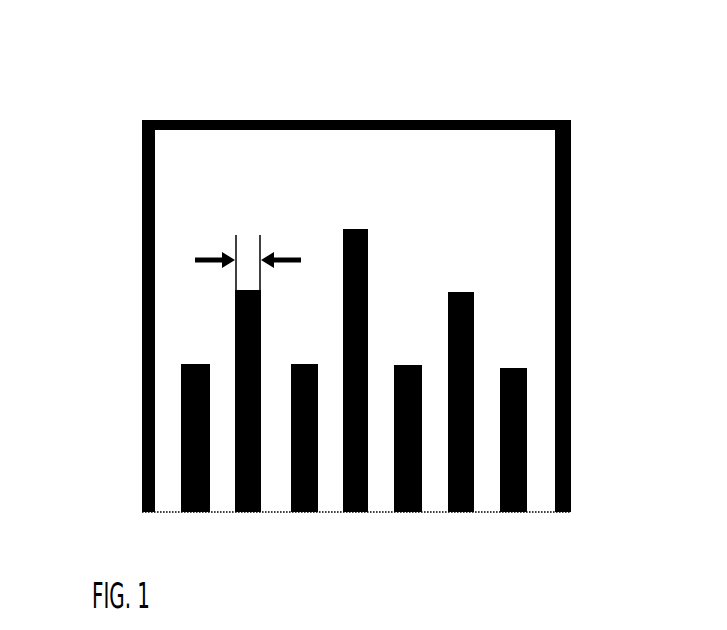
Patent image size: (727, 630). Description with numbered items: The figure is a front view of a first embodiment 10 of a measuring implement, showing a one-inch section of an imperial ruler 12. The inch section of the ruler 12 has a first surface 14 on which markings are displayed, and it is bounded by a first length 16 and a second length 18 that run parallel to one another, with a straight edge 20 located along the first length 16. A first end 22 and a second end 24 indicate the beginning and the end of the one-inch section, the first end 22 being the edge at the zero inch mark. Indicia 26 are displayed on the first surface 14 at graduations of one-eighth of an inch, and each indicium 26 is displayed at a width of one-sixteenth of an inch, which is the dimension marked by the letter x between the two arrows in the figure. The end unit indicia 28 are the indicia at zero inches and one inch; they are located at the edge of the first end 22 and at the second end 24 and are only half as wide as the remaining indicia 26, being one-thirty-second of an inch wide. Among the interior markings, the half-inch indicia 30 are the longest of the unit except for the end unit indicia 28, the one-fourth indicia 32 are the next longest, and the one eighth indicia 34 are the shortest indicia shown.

The first embodiment 10 is at (660, 186).
The imperial ruler 12 is at (223, 155).
The first surface 14 is at (492, 202).
The first length 16 is at (384, 512).
The second length 18 is at (418, 108).
The straight edge 20 is at (540, 515).
The first end 22 is at (142, 412).
The second end 24 is at (588, 457).
The indicia 26 is at (181, 437).
The end unit indicia 28 is at (156, 100).
The half-inch indicia 30 is at (376, 212).
The one-fourth indicia 32 is at (478, 281).
The one eighth indicia 34 is at (420, 364).